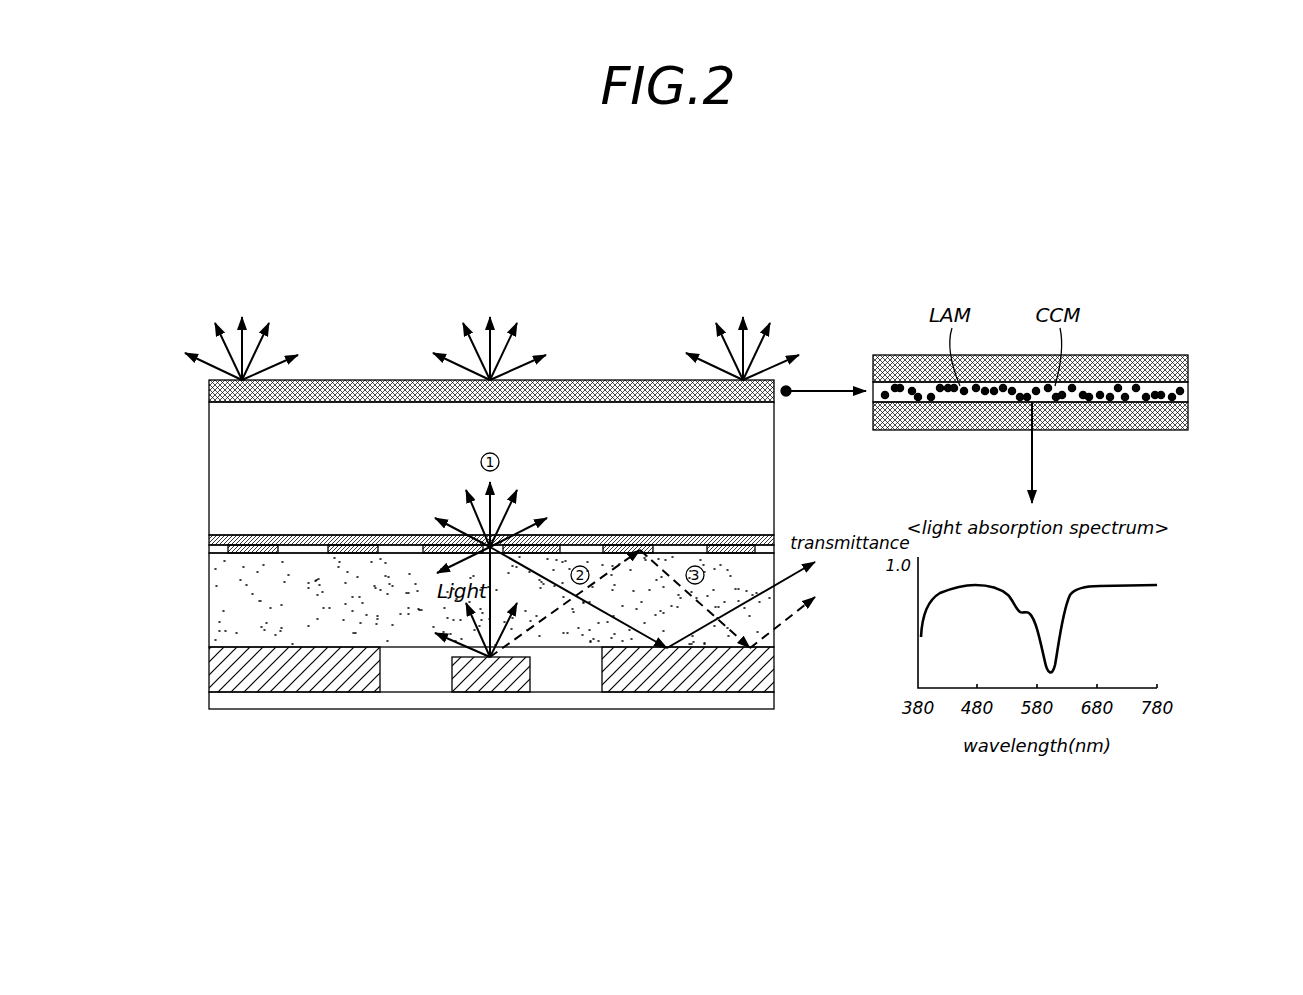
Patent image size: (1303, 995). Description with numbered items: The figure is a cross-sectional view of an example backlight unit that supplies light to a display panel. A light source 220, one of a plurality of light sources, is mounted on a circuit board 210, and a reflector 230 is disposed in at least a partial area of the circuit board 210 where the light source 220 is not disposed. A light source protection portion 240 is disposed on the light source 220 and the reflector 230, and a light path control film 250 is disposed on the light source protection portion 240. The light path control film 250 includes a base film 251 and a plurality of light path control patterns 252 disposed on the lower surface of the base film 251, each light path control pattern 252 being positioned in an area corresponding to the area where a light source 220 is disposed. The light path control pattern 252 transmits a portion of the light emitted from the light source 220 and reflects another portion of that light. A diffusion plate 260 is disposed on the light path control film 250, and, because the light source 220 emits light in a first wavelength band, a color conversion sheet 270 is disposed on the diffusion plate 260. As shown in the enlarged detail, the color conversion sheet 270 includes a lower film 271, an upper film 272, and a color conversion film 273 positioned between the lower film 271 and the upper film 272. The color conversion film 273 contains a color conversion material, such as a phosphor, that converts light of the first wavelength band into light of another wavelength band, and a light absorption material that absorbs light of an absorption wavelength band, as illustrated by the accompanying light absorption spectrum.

The circuit board 210 is at (215, 701).
The light source 220 is at (492, 678).
The reflector 230 is at (215, 668).
The light source protection portion 240 is at (215, 603).
The light path control film 250 is at (423, 549).
The base film 251 is at (210, 540).
The light path control pattern 252 is at (246, 553).
The diffusion plate 260 is at (215, 472).
The color conversion sheet 270 is at (215, 390).
The lower film 271 is at (1190, 421).
The upper film 272 is at (1190, 367).
The color conversion film 273 is at (1190, 393).